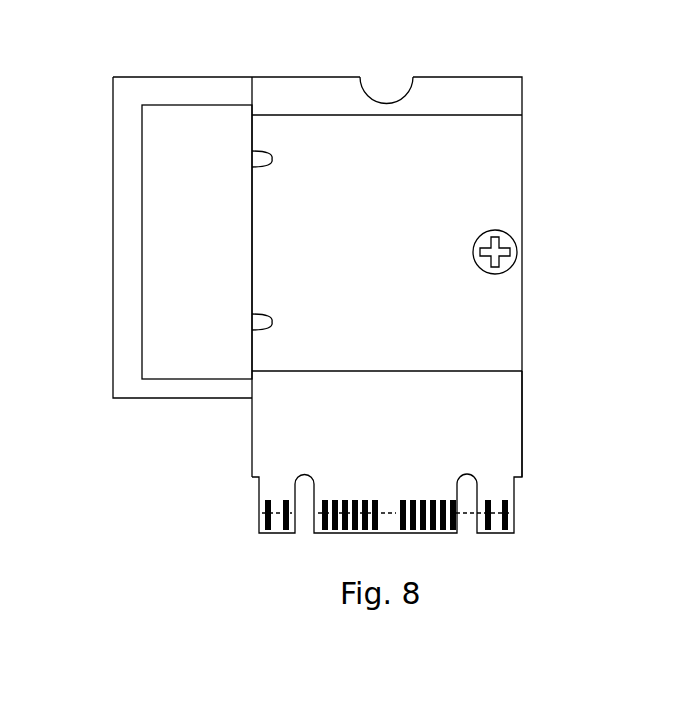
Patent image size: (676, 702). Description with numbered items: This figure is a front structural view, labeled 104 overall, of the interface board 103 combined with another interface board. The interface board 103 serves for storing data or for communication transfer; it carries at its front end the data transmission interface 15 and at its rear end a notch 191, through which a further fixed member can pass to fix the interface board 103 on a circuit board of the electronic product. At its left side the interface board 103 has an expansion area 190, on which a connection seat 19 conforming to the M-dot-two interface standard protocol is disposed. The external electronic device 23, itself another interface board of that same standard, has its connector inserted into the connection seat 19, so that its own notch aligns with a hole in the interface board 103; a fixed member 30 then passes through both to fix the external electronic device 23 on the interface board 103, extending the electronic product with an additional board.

The electronic device 104 is at (640, 60).
The notch 191 is at (388, 98).
The expansion area 190 is at (128, 115).
The connection seat 19 is at (197, 242).
The external electronic device 23 is at (509, 170).
The fixed member 30 is at (503, 243).
The interface board 103 is at (524, 418).
The data transmission interface 15 is at (265, 516).